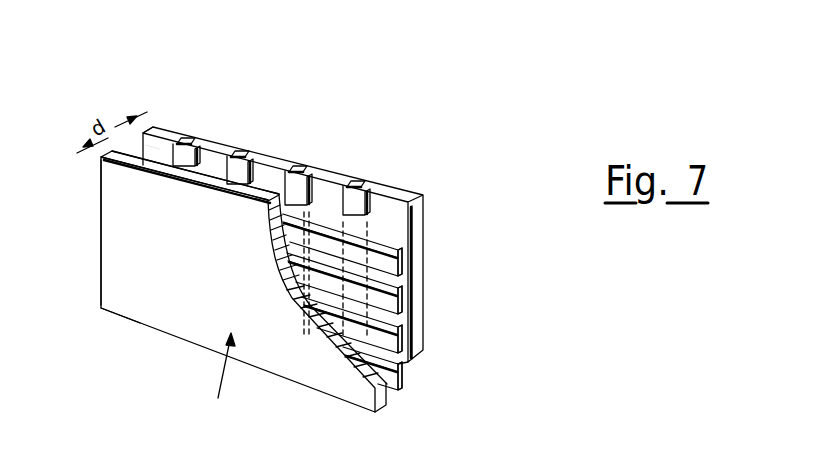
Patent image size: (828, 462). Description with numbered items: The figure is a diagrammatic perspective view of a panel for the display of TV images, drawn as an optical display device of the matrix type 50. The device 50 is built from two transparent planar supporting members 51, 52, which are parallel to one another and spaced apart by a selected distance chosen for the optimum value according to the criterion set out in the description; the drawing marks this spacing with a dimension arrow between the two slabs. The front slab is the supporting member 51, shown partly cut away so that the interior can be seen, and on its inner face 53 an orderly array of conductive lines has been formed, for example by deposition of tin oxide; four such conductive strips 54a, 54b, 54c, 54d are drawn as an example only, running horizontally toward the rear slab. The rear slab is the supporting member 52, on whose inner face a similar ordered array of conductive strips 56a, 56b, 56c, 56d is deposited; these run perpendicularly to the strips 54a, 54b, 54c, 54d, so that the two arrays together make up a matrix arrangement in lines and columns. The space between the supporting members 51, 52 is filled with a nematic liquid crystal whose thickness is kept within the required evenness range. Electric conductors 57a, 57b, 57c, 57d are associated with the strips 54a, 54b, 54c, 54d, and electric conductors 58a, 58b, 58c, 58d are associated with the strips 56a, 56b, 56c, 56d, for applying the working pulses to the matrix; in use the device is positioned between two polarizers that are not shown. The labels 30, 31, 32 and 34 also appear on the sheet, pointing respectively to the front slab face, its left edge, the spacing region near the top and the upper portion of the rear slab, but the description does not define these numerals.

The front plate 30 is at (244, 281).
The left edge of front plate 31 is at (101, 250).
The spacing between plates 32 is at (146, 113).
The top portion of back plate 34 is at (149, 146).
The optical display device 50 is at (210, 378).
The transparent planar supporting member 51 is at (128, 303).
The transparent planar supporting member 52 is at (419, 197).
The inner face 53 is at (123, 153).
The conductive strip 54a is at (291, 230).
The conductive strip 54b is at (302, 273).
The conductive strip 54c is at (320, 318).
The conductive strip 54d is at (343, 365).
The conductive strip 56a is at (199, 158).
The conductive strip 56b is at (232, 172).
The conductive strip 56c is at (292, 194).
The conductive strip 56d is at (357, 212).
The electric conductor 57a is at (403, 258).
The electric conductor 57b is at (403, 295).
The electric conductor 57c is at (403, 334).
The electric conductor 57d is at (403, 375).
The electric conductor 58a is at (184, 143).
The electric conductor 58b is at (240, 157).
The electric conductor 58c is at (293, 172).
The electric conductor 58d is at (357, 187).